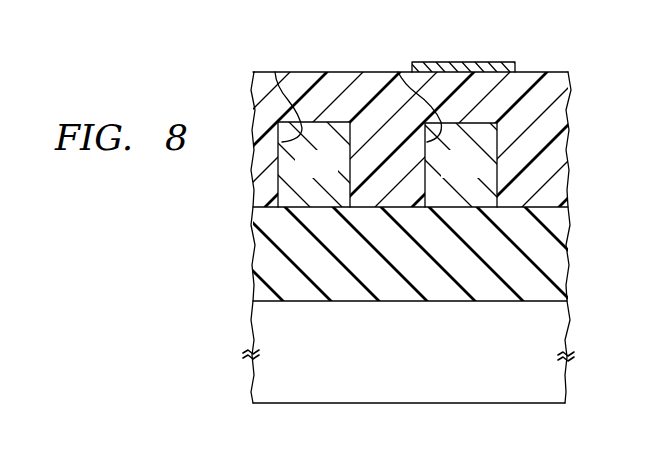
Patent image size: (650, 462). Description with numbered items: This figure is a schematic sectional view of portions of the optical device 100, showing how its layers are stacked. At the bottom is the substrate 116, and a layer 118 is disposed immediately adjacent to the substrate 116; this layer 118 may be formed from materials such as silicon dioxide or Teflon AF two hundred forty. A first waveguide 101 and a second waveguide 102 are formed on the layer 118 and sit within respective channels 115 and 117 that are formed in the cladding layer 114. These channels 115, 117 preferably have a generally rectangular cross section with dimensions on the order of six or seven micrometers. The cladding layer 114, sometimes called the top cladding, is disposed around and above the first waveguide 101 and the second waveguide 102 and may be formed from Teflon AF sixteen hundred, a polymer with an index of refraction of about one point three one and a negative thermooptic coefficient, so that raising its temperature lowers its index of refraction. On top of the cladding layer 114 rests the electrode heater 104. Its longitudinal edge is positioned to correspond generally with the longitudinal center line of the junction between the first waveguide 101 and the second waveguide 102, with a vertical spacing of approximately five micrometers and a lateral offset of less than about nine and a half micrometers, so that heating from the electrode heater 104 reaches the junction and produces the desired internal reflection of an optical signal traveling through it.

The optical device 100 is at (171, 198).
The first waveguide 101 is at (481, 176).
The second waveguide 102 is at (336, 176).
The electrode heater 104 is at (477, 62).
The cladding layer 114 is at (262, 86).
The channel 115 is at (398, 72).
The substrate 116 is at (250, 383).
The channel 117 is at (275, 72).
The layer 118 is at (258, 256).